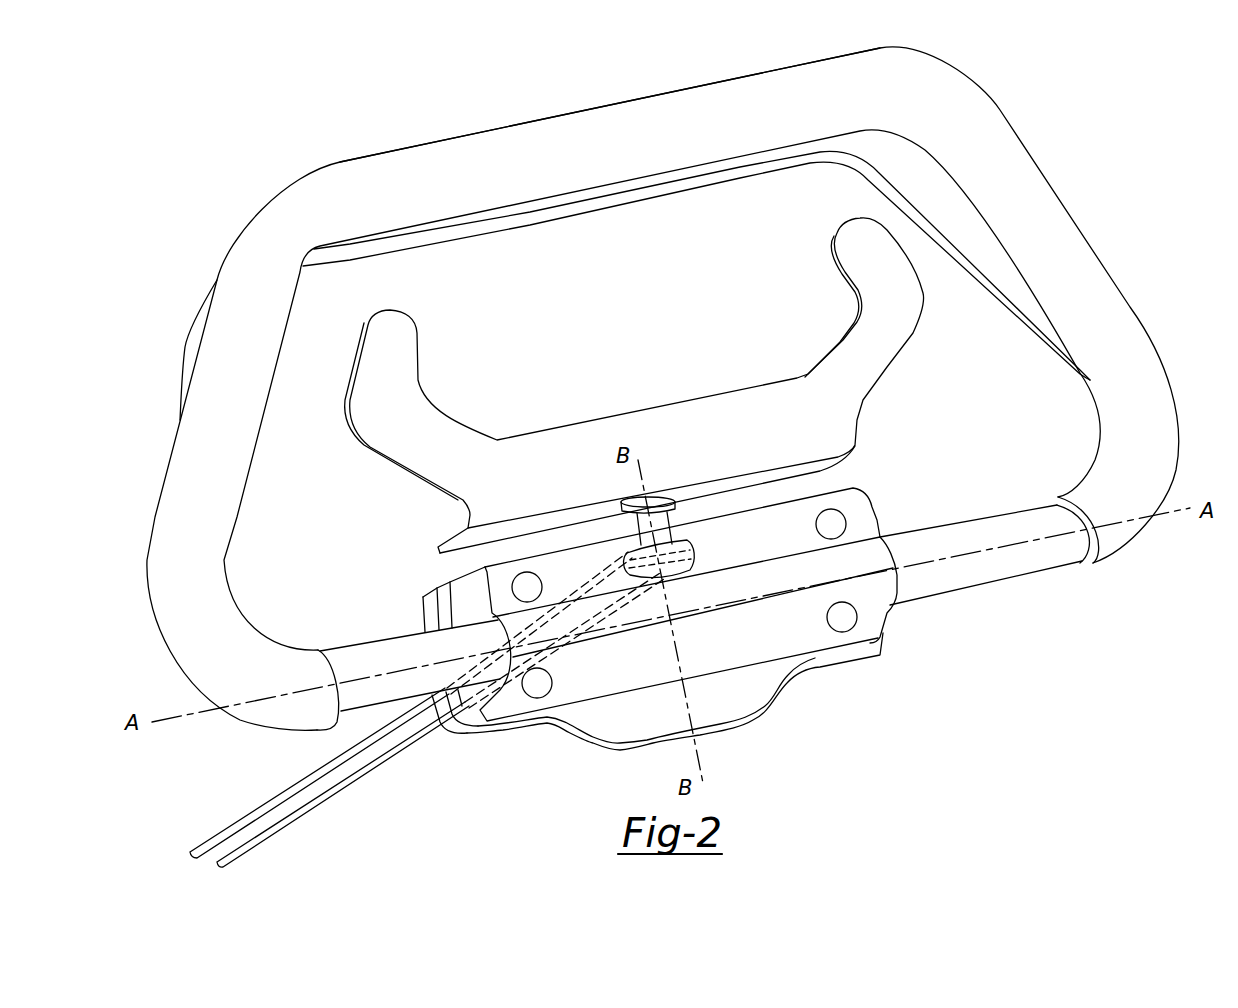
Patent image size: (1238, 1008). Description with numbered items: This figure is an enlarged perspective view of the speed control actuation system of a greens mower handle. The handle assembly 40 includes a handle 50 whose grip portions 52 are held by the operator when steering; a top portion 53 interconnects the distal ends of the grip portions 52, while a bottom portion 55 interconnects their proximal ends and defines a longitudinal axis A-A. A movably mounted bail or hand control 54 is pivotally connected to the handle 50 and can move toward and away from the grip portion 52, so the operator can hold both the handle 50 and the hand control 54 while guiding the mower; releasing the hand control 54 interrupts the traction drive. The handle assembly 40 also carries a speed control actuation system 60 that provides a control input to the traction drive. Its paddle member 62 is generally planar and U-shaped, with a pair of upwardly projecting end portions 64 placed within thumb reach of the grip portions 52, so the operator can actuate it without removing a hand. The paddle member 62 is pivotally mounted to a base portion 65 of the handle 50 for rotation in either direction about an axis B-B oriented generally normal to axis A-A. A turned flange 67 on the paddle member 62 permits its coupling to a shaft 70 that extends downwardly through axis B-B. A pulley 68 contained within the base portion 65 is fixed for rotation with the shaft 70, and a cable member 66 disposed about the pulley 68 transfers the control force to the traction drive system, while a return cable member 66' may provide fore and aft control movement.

The handle assembly 40 is at (1055, 100).
The handle 50 is at (580, 90).
The grip portion 52 is at (1133, 307).
The top portion 53 is at (393, 170).
The hand control 54 is at (990, 284).
The bottom portion 55 is at (370, 648).
The speed control actuation system 60 is at (721, 305).
The paddle member 62 is at (713, 403).
The end portions 64 is at (853, 255).
The base portion 65 is at (877, 507).
The cable member 66 is at (400, 705).
The return cable member 66' is at (442, 719).
The turned flange 67 is at (440, 541).
The pulley 68 is at (682, 566).
The shaft 70 is at (673, 515).